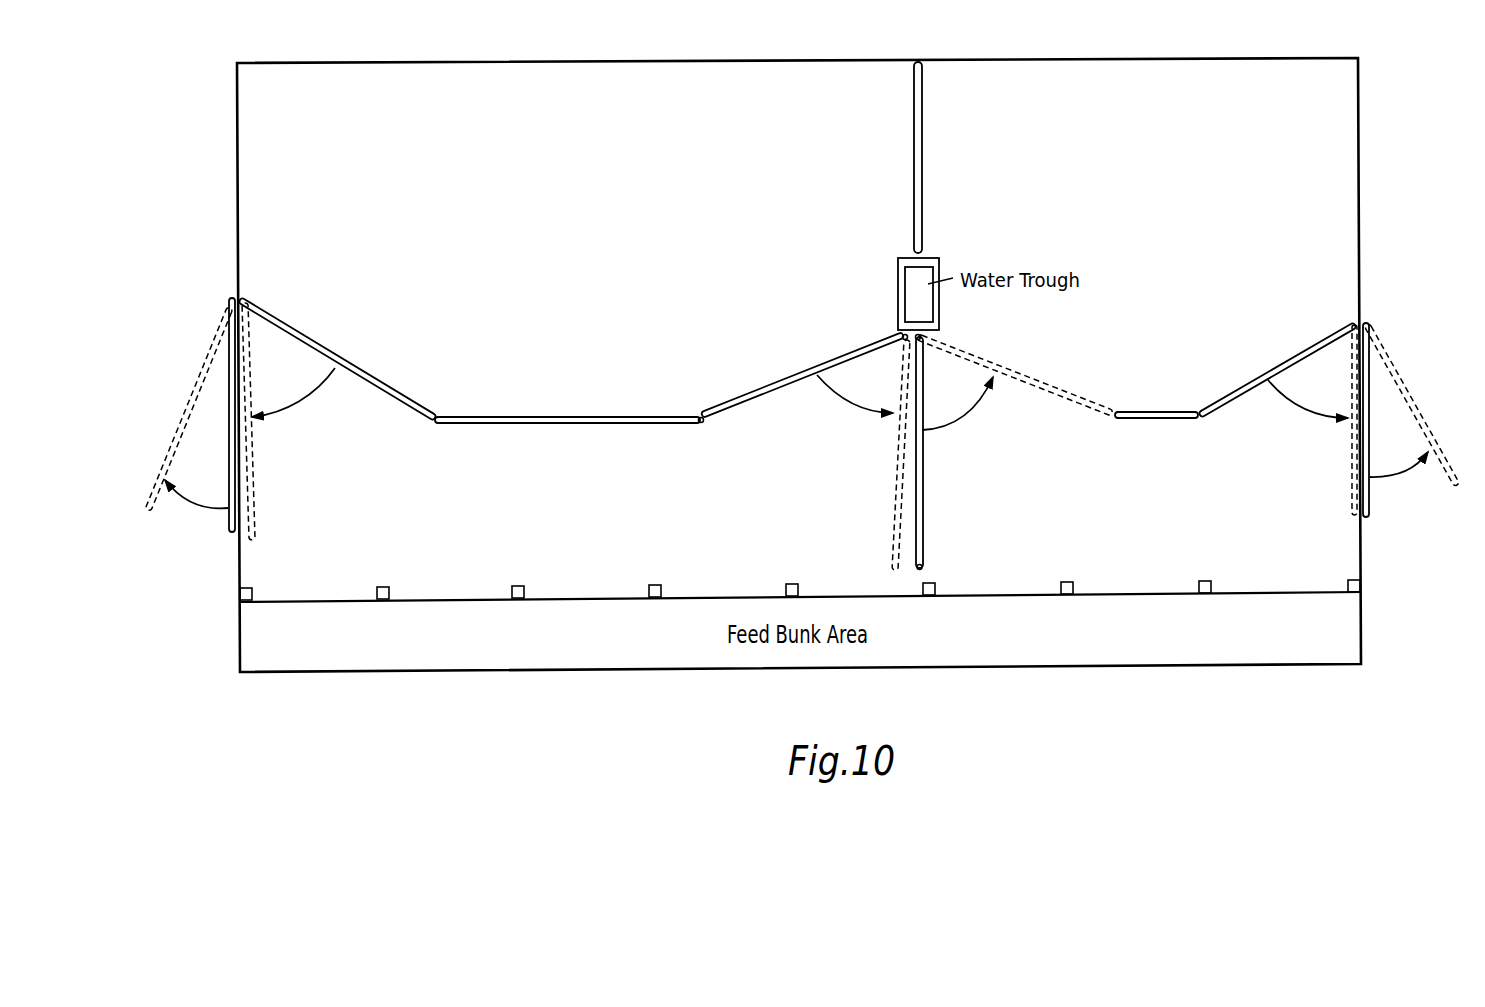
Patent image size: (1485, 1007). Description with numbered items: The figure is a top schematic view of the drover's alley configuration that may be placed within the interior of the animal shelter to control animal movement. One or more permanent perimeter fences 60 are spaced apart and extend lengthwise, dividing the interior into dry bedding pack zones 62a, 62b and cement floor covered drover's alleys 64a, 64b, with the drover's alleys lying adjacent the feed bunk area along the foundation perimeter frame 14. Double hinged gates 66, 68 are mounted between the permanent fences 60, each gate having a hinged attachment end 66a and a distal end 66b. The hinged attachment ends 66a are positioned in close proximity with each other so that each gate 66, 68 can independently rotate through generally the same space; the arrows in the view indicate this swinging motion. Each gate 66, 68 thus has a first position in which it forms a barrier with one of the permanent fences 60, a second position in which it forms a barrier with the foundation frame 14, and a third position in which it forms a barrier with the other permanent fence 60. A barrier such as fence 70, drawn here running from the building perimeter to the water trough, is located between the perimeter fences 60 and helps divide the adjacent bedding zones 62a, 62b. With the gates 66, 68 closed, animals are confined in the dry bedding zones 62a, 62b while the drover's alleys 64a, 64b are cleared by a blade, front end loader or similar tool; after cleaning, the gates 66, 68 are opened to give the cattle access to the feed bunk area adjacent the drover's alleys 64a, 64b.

The foundation perimeter frame 14 is at (933, 585).
The permanent perimeter fence 60 is at (563, 417).
The dry bedding pack zone 62a is at (580, 222).
The dry bedding pack zone 62b is at (1163, 222).
The drover's alley 64a is at (580, 526).
The drover's alley 64b is at (1163, 526).
The double hinged gate 66 is at (800, 372).
The hinged attachment end 66a is at (900, 333).
The distal end 66b is at (698, 417).
The double hinged gate 68 is at (312, 340).
The fence 70 is at (920, 142).